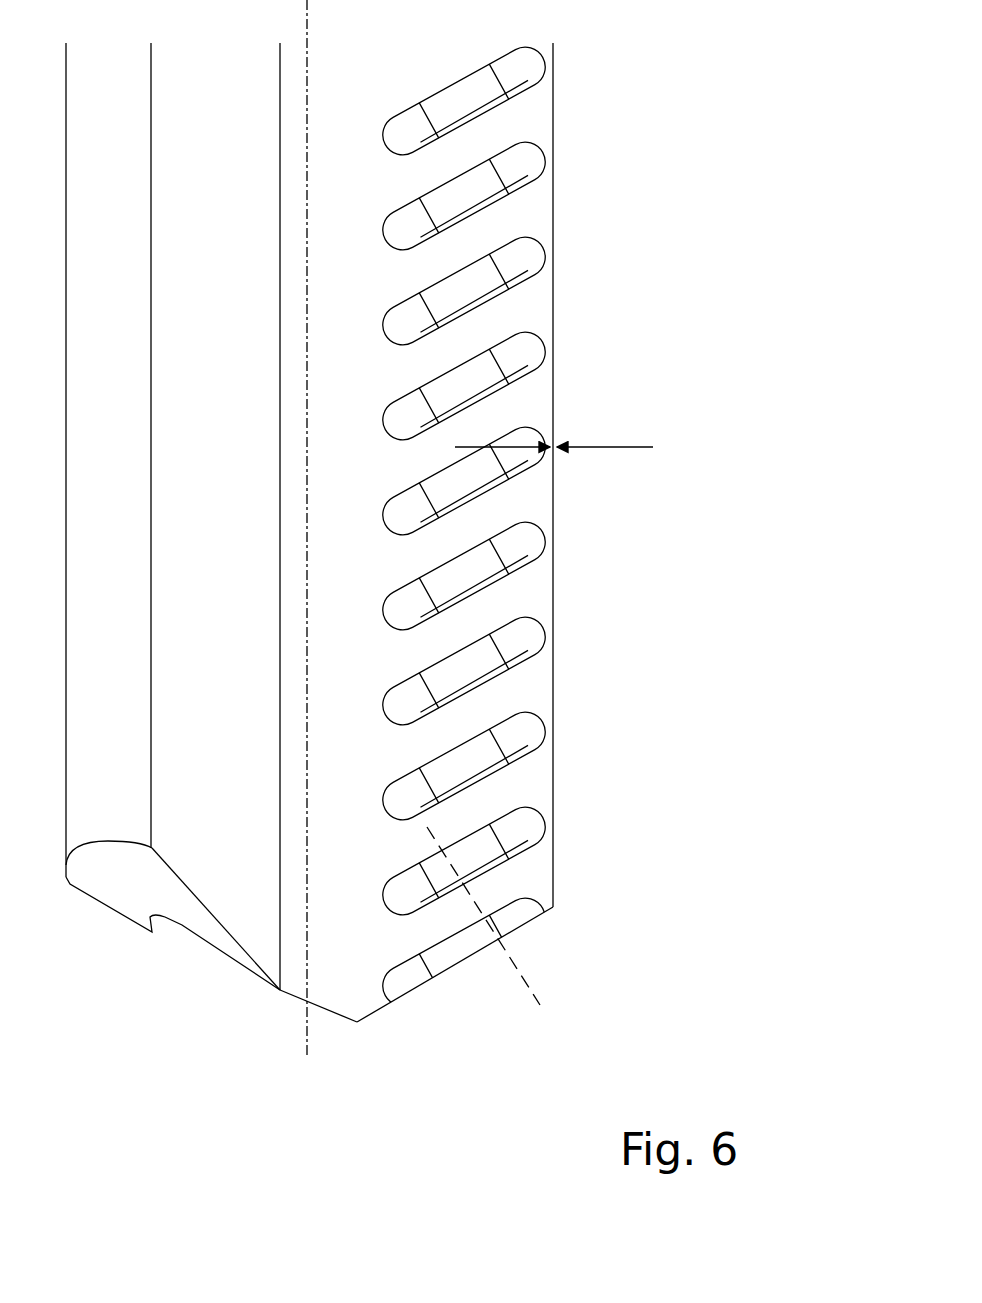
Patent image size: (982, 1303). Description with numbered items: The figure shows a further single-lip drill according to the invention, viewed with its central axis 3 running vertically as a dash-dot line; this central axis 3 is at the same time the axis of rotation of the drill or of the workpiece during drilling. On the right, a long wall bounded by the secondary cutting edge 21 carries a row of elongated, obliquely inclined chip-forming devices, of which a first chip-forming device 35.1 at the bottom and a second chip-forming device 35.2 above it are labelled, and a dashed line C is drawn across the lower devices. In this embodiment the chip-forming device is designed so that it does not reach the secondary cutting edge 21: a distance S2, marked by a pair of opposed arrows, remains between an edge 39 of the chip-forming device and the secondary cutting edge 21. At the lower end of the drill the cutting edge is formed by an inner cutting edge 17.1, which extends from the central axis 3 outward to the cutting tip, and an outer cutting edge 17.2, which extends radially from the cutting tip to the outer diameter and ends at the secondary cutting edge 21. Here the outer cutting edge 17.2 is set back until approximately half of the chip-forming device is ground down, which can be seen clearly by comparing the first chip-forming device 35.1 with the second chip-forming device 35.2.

The central axis 3 is at (307, 1043).
The secondary cutting edge 21 is at (487, 611).
The edge of the chip-forming device 39 is at (545, 626).
The second chip-forming device 35.2 is at (523, 823).
The first chip-forming device 35.1 is at (517, 920).
The inner cutting edge 17.1 is at (337, 1013).
The outer cutting edge 17.2 is at (413, 1000).
The center line C is at (495, 937).
The distance S2 is at (554, 430).